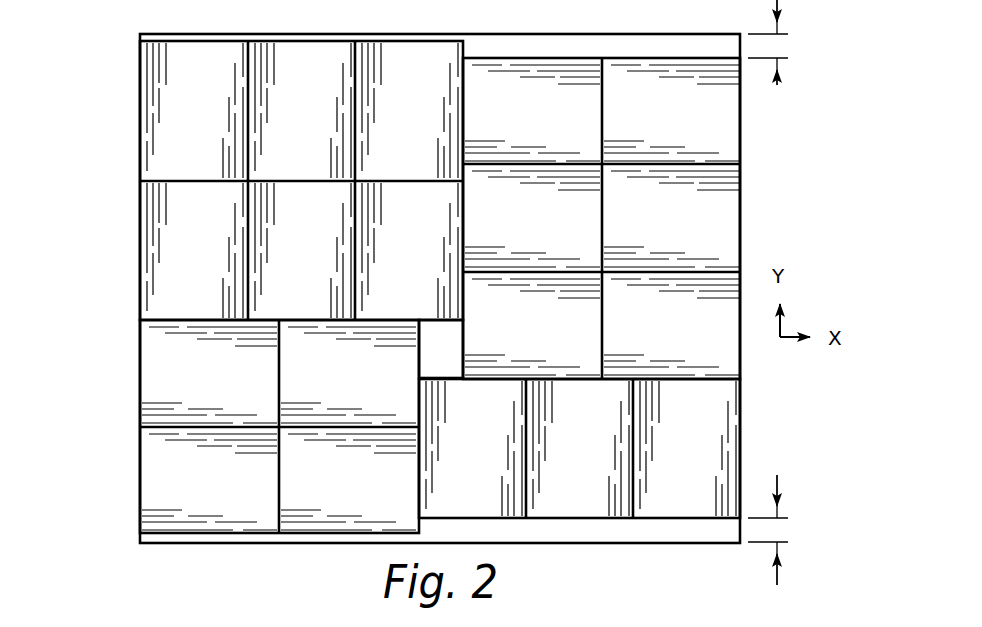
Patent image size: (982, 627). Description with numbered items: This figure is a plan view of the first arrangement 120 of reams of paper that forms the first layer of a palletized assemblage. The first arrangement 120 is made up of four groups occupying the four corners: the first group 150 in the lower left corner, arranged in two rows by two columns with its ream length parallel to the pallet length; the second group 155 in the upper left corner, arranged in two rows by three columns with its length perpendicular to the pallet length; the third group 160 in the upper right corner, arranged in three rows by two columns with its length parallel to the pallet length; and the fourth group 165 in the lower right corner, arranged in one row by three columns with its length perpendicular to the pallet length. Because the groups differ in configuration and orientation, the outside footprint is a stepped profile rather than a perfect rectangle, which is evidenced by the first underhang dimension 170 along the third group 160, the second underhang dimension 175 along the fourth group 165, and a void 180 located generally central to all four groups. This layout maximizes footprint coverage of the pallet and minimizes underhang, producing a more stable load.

The first arrangement 120 is at (110, 78).
The second group 155 is at (298, 219).
The third group 160 is at (550, 122).
The first group 150 is at (251, 469).
The void 180 is at (445, 350).
The fourth group 165 is at (569, 450).
The first underhang dimension 170 is at (777, 45).
The second underhang dimension 175 is at (777, 530).